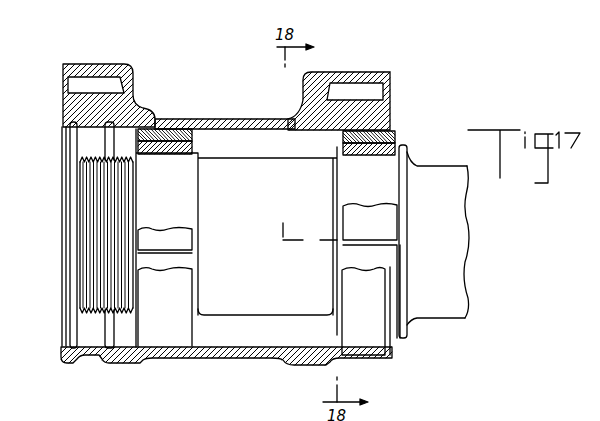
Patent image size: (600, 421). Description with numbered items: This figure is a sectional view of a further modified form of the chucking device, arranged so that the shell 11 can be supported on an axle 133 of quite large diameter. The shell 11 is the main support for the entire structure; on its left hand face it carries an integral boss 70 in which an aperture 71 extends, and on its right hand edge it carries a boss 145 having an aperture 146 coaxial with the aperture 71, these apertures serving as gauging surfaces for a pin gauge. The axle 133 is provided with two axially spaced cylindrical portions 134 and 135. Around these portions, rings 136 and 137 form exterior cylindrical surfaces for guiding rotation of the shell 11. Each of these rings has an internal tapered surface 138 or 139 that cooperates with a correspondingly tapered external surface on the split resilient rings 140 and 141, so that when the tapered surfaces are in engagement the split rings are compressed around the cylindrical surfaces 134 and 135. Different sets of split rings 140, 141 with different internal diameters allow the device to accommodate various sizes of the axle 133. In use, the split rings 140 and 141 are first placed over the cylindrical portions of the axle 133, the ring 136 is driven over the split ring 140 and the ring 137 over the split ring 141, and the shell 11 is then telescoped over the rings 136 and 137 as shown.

The shell 11 is at (243, 120).
The boss 70 is at (78, 65).
The aperture 71 is at (72, 82).
The axle 133 is at (442, 173).
The cylindrical portion 134 is at (195, 152).
The cylindrical portion 135 is at (397, 142).
The ring 136 is at (373, 170).
The ring 137 is at (160, 123).
The internal tapered surface 138 is at (350, 155).
The internal tapered surface 139 is at (178, 126).
The split resilient ring 140 is at (352, 250).
The split resilient ring 141 is at (180, 235).
The boss 145 is at (327, 73).
The aperture 146 is at (367, 90).